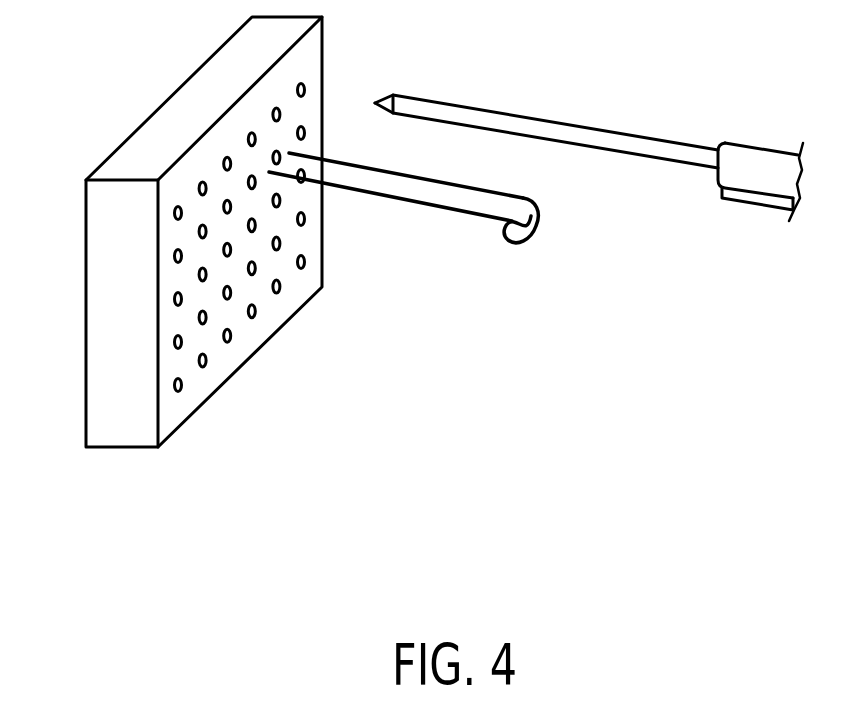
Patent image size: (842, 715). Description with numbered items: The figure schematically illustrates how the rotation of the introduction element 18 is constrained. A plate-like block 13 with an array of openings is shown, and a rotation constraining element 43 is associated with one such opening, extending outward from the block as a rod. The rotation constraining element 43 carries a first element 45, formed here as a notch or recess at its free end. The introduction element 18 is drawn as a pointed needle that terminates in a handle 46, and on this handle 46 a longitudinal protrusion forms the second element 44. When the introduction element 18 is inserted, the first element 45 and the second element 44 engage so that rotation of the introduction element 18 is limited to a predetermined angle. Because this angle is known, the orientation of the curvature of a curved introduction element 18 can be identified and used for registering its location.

The perforated plate / block 13 is at (87, 285).
The introduction element 18 is at (628, 100).
The rotation constraining element 43 is at (420, 256).
The second element 44 is at (743, 197).
The first element 45 is at (533, 246).
The handle 46 is at (747, 138).